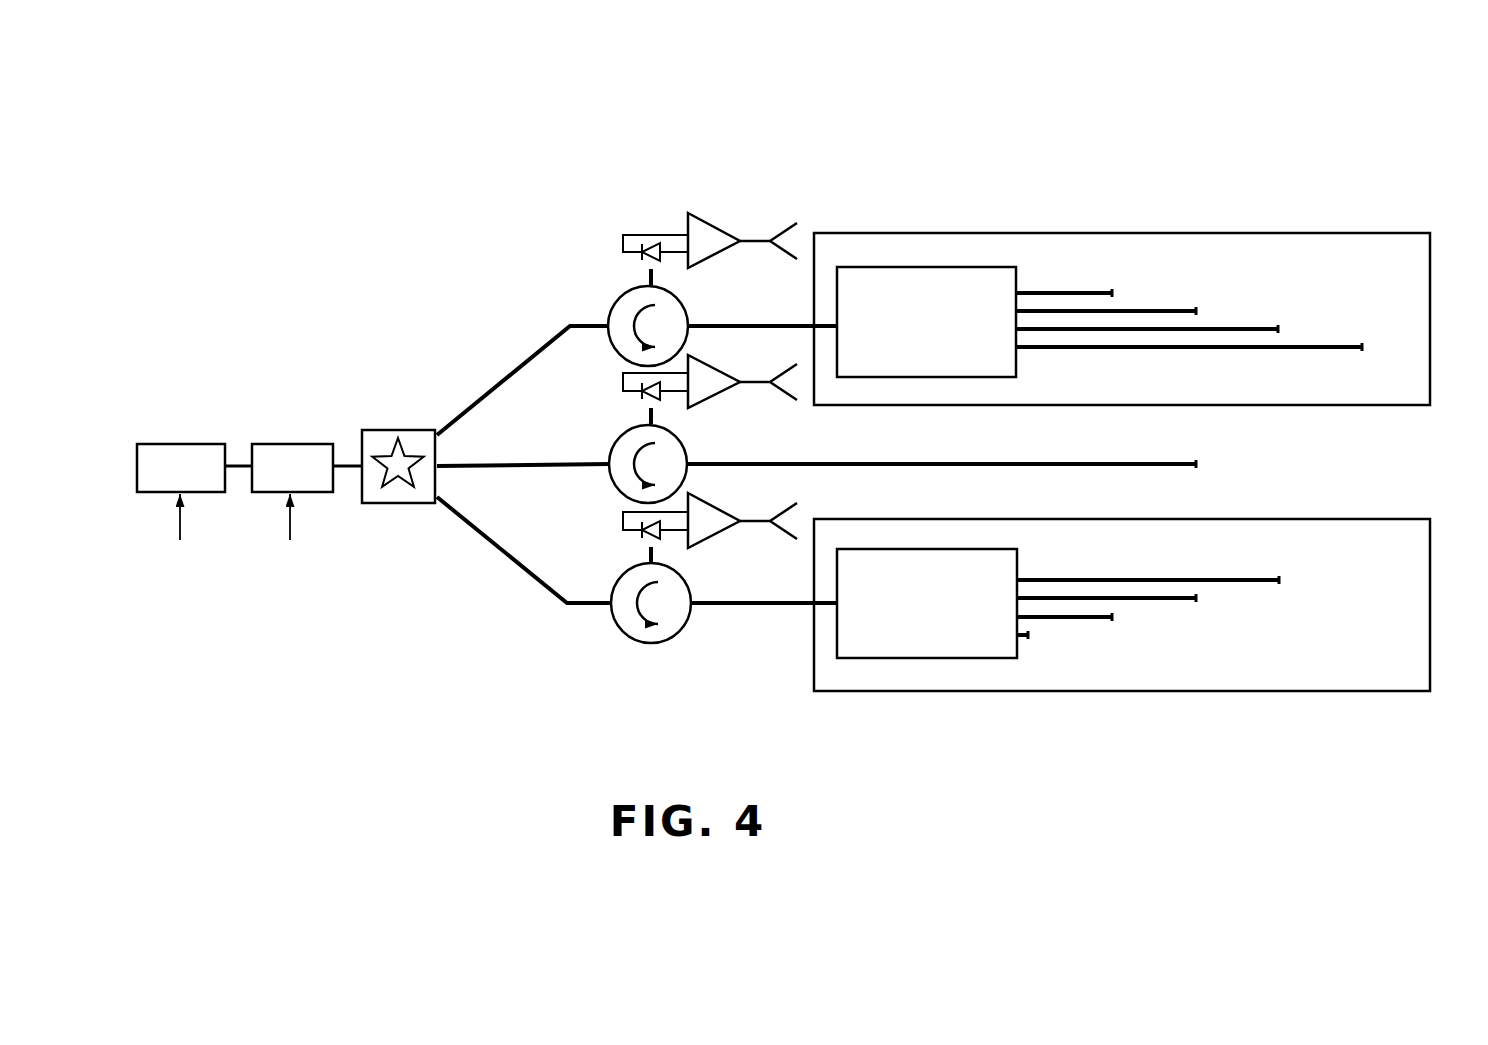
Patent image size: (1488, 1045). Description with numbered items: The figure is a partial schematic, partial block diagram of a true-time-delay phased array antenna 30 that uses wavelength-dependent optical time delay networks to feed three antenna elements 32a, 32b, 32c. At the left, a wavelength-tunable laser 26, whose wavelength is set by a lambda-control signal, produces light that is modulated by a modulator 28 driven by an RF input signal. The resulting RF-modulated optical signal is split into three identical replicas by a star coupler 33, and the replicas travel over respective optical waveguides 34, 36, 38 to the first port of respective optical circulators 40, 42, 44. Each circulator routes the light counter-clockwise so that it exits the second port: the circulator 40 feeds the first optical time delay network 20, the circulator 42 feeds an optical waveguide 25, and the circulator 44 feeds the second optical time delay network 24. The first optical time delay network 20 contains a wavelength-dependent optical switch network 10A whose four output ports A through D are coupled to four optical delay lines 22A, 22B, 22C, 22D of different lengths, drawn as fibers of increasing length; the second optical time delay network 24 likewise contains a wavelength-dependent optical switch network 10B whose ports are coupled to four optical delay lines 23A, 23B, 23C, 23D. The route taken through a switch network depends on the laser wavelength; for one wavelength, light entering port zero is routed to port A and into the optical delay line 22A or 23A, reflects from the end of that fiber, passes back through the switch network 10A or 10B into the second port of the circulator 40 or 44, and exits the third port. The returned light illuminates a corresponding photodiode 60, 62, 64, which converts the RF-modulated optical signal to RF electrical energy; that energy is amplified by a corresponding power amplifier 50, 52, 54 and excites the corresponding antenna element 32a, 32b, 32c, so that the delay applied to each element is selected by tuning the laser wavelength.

The true-time-delay phased array antenna 30 is at (405, 172).
The wavelength-tunable laser 26 is at (180, 440).
The modulator 28 is at (290, 440).
The star coupler 33 is at (395, 425).
The optical waveguide 34 is at (503, 373).
The optical waveguide 36 is at (498, 458).
The optical waveguide 38 is at (497, 553).
The optical circulator 40 is at (602, 320).
The optical circulator 42 is at (605, 458).
The optical circulator 44 is at (607, 597).
The photodiode 60 is at (637, 260).
The photodiode 62 is at (634, 400).
The photodiode 64 is at (636, 538).
The power amplifier 50 is at (711, 212).
The power amplifier 52 is at (710, 352).
The power amplifier 54 is at (712, 491).
The antenna element 32a is at (797, 214).
The antenna element 32b is at (797, 354).
The antenna element 32c is at (797, 494).
The wavelength-dependent optical switch network 10A is at (912, 262).
The wavelength-dependent optical switch network 10B is at (888, 661).
The first optical time delay network 20 is at (1428, 229).
The second optical time delay network 24 is at (1430, 514).
The optical waveguide 25 is at (1100, 458).
The optical delay line 22A is at (1060, 287).
The optical delay line 22B is at (1147, 306).
The optical delay line 22C is at (1240, 324).
The optical delay line 22D is at (1320, 340).
The optical delay line 23A is at (1255, 587).
The optical delay line 23B is at (1178, 607).
The optical delay line 23C is at (1097, 627).
The optical delay line 23D is at (1030, 650).